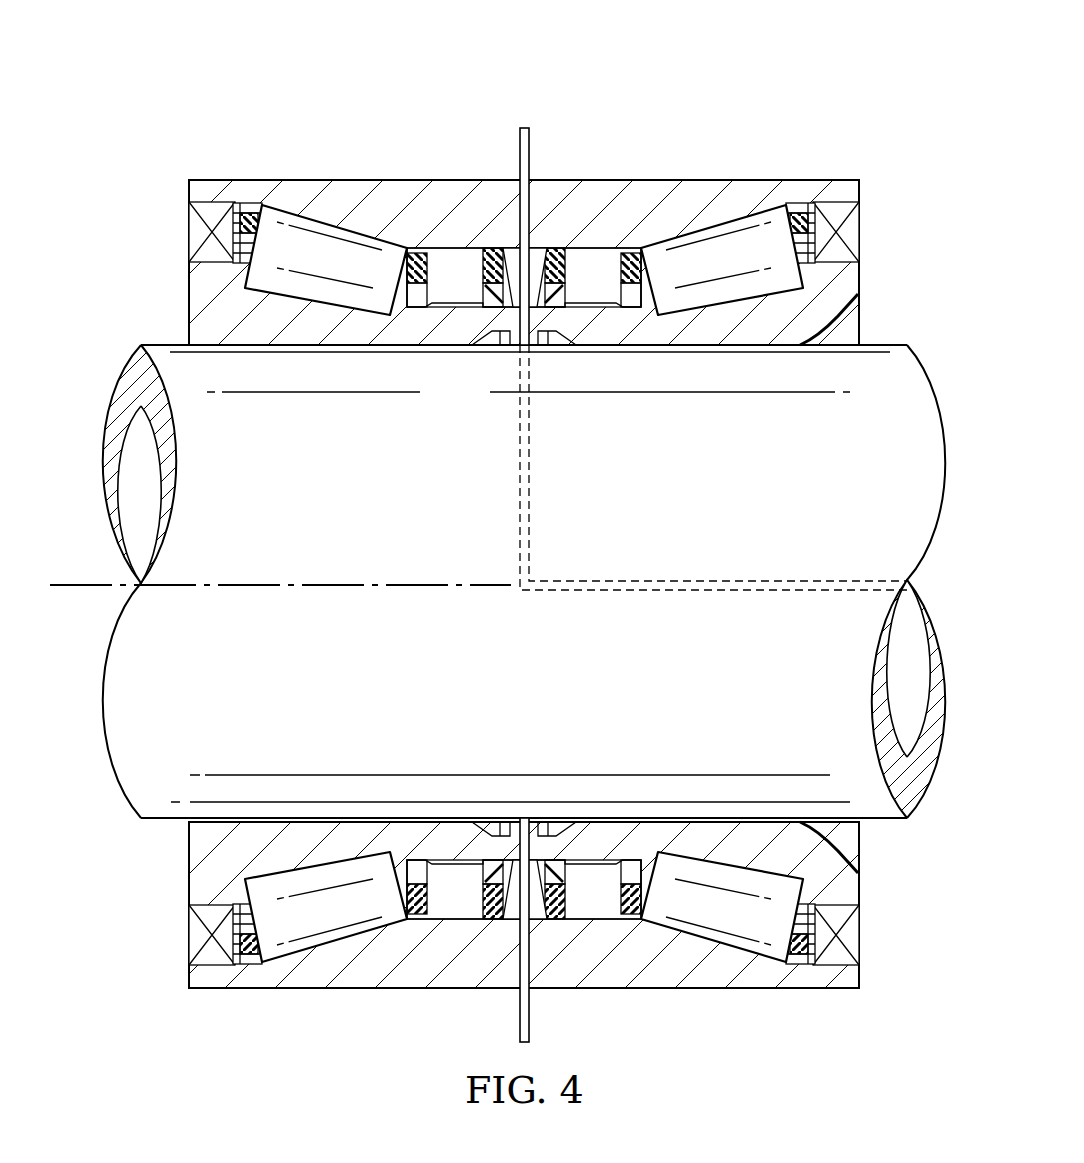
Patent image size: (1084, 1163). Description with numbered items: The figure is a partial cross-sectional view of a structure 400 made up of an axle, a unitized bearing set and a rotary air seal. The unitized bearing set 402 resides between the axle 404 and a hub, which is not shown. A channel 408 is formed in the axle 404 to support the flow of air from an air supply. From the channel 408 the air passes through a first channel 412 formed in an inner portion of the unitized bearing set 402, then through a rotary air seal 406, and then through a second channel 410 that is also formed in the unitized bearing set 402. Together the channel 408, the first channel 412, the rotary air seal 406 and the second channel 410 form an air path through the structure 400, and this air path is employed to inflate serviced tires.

The structure 400 is at (297, 80).
The unitized bearing set 402 is at (796, 152).
The axle 404 is at (892, 345).
The rotary air seal 406 is at (484, 906).
The channel 408 is at (748, 590).
The second channel 410 is at (520, 147).
The first channel 412 is at (501, 333).